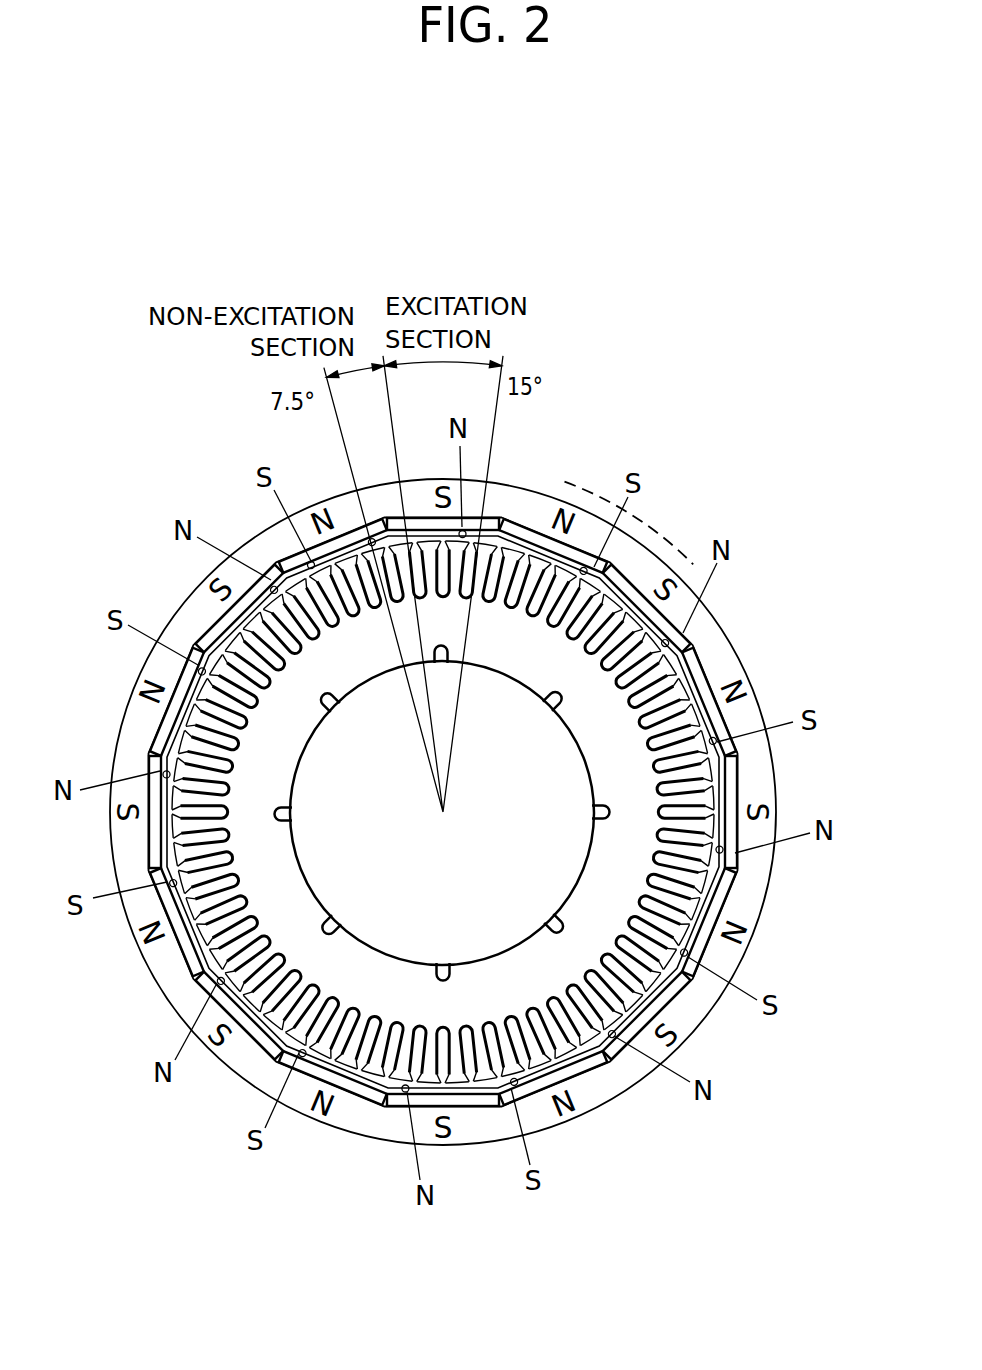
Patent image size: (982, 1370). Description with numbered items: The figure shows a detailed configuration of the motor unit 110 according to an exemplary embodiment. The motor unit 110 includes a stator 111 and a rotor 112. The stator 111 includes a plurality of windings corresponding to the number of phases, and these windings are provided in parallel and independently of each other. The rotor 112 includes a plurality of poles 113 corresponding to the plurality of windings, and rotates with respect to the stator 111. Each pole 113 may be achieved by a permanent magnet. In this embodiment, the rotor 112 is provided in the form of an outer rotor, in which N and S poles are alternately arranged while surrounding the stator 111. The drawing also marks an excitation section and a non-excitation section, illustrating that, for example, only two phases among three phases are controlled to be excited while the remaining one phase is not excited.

The motor unit 110 is at (729, 405).
The stator 111 is at (622, 845).
The rotor 112 is at (703, 627).
The pole 113 is at (705, 668).